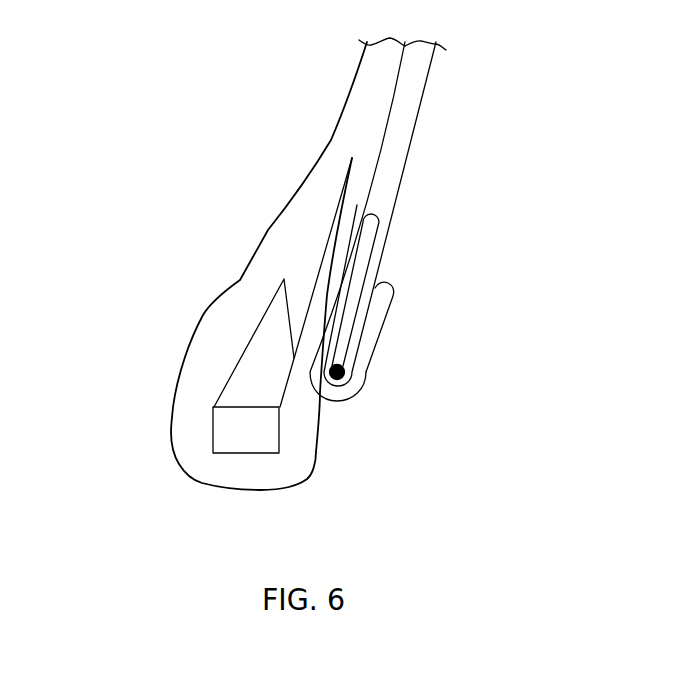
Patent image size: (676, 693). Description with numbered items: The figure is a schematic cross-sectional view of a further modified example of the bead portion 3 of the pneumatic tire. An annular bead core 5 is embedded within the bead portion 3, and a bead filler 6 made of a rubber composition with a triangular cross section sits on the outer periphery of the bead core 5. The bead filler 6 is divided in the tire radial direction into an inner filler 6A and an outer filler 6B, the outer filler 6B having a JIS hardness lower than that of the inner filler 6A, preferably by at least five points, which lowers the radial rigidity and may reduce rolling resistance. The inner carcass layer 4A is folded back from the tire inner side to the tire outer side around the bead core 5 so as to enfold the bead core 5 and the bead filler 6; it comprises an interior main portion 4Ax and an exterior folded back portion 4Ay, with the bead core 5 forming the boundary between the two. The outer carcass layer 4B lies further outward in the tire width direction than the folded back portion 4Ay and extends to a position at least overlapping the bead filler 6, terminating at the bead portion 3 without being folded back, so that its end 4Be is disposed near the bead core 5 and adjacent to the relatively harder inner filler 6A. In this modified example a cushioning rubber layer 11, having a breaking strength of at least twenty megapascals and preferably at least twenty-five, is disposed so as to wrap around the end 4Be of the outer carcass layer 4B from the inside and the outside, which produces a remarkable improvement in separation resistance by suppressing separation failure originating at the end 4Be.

The bead portion 3 is at (145, 410).
The inner carcass layer 4A is at (307, 176).
The main portion 4Ax is at (360, 78).
The folded back portion 4Ay is at (400, 88).
The outer carcass layer 4B is at (408, 165).
The end of the outer carcass layer 4Be is at (345, 373).
The bead core 5 is at (270, 442).
The bead filler 6 is at (135, 230).
The inner filler 6A is at (262, 342).
The outer filler 6B is at (299, 271).
The cushioning rubber layer 11 is at (370, 337).